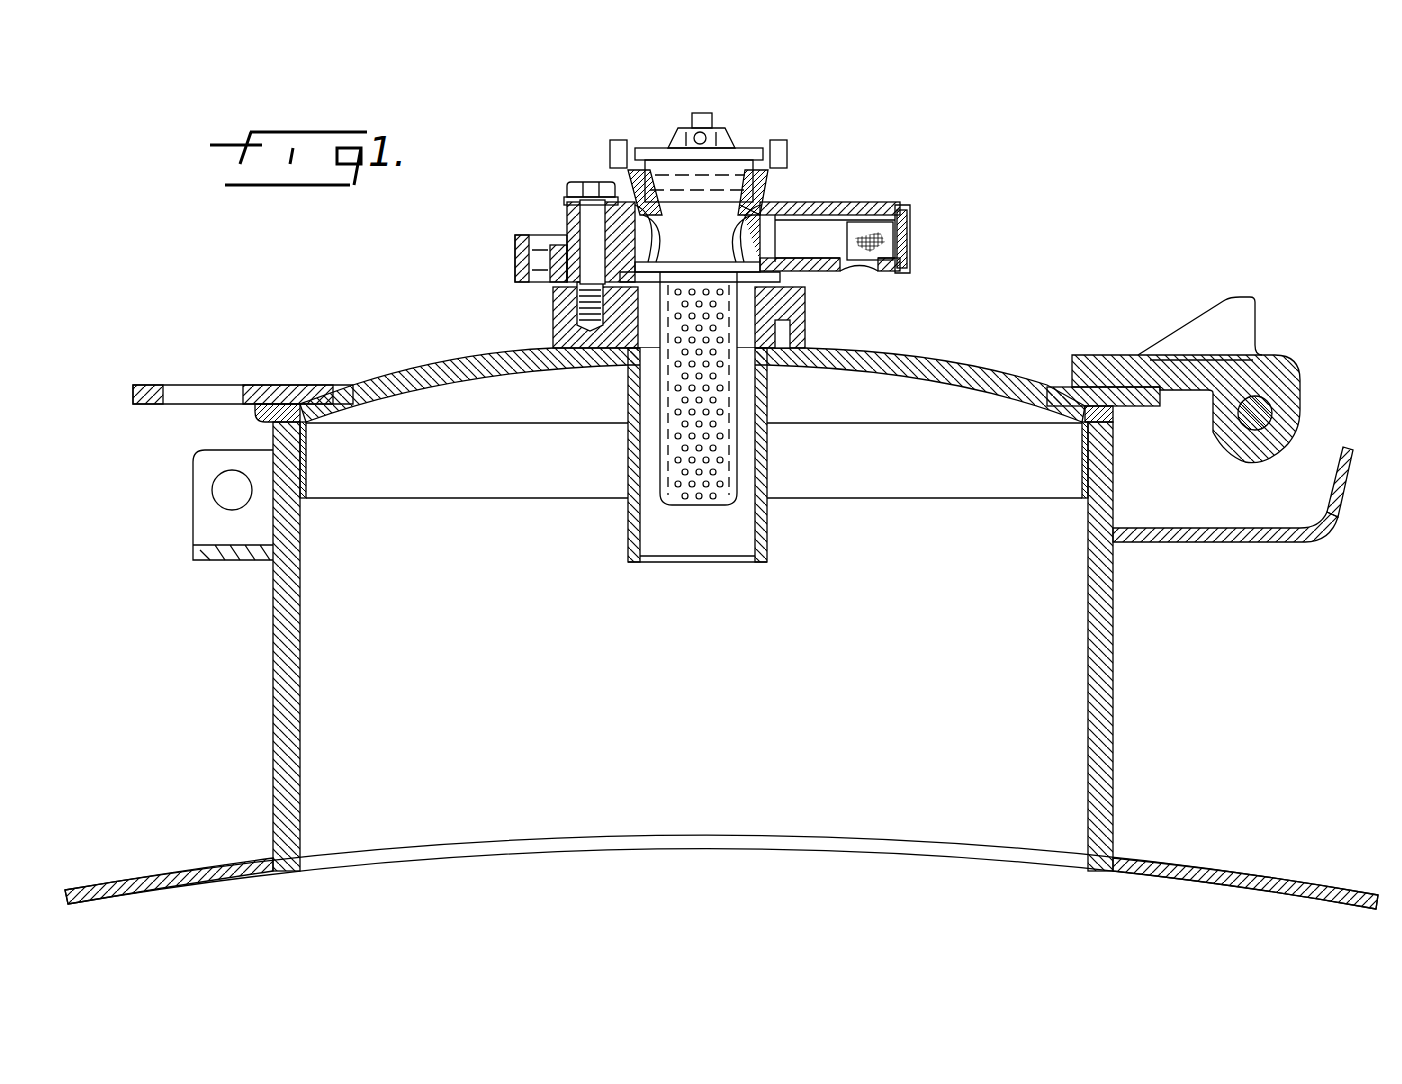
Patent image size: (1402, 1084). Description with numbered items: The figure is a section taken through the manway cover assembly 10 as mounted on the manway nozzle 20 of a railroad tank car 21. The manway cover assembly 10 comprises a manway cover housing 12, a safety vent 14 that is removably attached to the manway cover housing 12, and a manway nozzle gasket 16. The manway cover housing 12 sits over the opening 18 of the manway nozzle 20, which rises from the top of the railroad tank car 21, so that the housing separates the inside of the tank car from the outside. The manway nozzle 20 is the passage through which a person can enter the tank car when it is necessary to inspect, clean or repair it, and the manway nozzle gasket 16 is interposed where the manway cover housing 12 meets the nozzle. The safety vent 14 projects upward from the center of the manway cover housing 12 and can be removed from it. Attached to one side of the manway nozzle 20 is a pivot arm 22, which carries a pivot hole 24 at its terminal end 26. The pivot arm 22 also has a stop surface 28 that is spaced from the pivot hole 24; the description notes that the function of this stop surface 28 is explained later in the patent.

The manway cover assembly 10 is at (976, 213).
The manway cover housing 12 is at (912, 367).
The safety vent 14 is at (816, 197).
The manway nozzle gasket 16 is at (308, 470).
The opening 18 is at (920, 820).
The manway nozzle 20 is at (274, 652).
The railroad tank car 21 is at (158, 872).
The pivot arm 22 is at (1202, 548).
The pivot hole 24 is at (1250, 467).
The terminal end 26 is at (1303, 432).
The stop surface 28 is at (1350, 448).